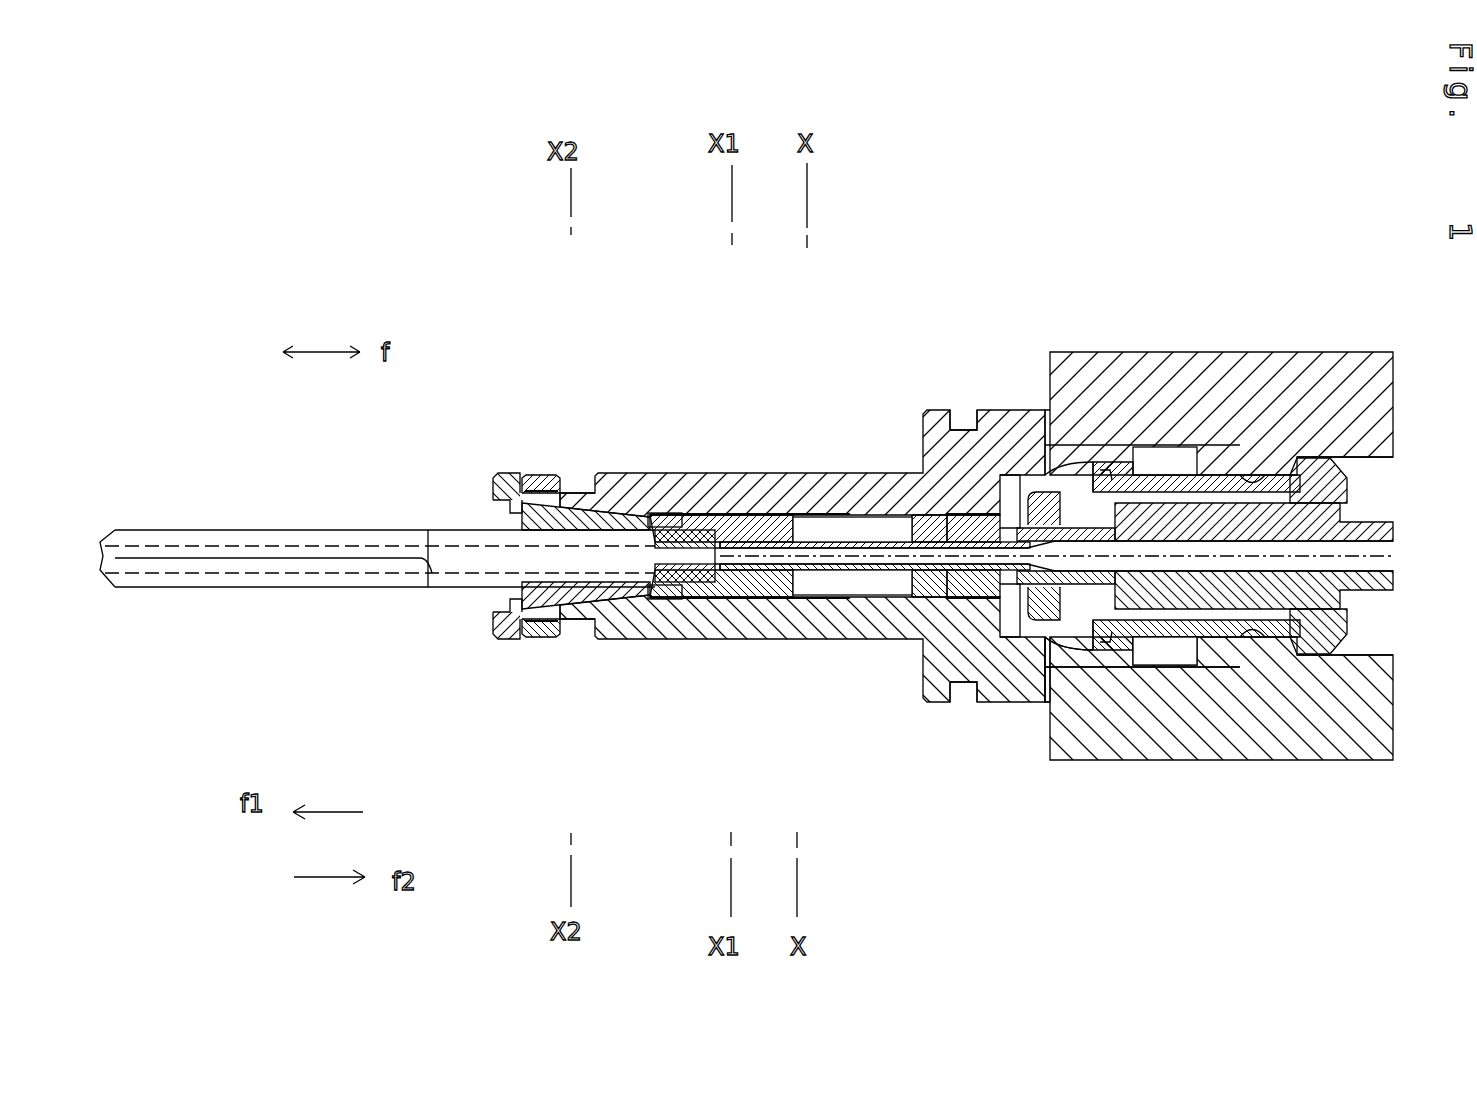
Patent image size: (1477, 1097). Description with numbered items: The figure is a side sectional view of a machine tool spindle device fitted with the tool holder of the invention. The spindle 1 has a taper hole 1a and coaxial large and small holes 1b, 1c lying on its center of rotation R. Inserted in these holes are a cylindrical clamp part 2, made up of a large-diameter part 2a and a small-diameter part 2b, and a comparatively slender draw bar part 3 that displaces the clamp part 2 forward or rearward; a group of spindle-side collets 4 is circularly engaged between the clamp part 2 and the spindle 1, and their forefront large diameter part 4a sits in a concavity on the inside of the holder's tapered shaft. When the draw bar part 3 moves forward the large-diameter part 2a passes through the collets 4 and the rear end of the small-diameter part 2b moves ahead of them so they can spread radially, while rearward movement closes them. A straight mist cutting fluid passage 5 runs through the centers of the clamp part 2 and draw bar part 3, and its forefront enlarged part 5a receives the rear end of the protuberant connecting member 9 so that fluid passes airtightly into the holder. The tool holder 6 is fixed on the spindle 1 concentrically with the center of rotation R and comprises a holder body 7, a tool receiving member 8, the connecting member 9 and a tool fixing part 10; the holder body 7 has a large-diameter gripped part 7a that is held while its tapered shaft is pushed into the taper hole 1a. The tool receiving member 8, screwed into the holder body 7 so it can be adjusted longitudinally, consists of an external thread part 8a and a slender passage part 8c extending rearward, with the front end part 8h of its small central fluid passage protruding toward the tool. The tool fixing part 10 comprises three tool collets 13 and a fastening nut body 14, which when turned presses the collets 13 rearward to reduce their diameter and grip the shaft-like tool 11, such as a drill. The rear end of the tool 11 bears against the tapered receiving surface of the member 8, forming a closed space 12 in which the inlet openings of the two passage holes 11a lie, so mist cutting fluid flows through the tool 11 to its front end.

The spindle 1 is at (1222, 377).
The taper hole 1a is at (1050, 648).
The large hole 1b is at (1270, 470).
The small hole 1c is at (1375, 458).
The cylindrical clamp part 2 is at (1186, 836).
The large-diameter part 2a is at (1097, 625).
The small-diameter part 2b is at (1233, 585).
The draw bar part 3 is at (1375, 580).
The spindle-side collets 4 is at (1260, 640).
The forefront large diameter part 4a is at (1097, 470).
The mist cutting fluid passage 5 is at (1173, 520).
The forefront enlarged part 5a is at (1105, 478).
The tool holder 6 is at (707, 378).
The holder body 7 is at (816, 473).
The gripped part 7a is at (953, 430).
The tool receiving member 8 is at (743, 548).
The external thread part 8a is at (725, 598).
The slender passage part 8c is at (868, 597).
The front end part 8h is at (725, 548).
The protuberant connecting member 9 is at (1010, 520).
The tool fixing part 10 is at (545, 468).
The shaft-like tool 11 is at (325, 530).
The passage holes 11a is at (215, 546).
The closed space 12 is at (718, 590).
The tool collets 13 is at (587, 603).
The fastening nut body 14 is at (497, 644).
The center of rotation R is at (1393, 548).